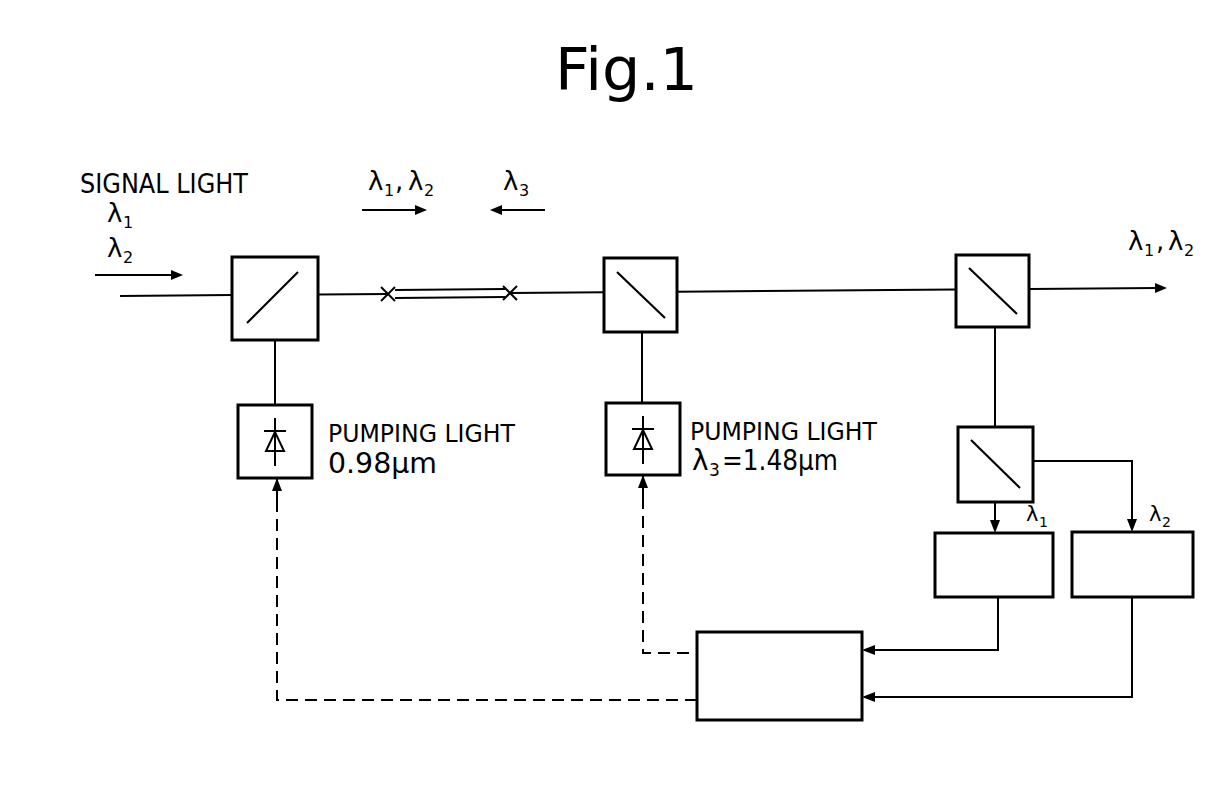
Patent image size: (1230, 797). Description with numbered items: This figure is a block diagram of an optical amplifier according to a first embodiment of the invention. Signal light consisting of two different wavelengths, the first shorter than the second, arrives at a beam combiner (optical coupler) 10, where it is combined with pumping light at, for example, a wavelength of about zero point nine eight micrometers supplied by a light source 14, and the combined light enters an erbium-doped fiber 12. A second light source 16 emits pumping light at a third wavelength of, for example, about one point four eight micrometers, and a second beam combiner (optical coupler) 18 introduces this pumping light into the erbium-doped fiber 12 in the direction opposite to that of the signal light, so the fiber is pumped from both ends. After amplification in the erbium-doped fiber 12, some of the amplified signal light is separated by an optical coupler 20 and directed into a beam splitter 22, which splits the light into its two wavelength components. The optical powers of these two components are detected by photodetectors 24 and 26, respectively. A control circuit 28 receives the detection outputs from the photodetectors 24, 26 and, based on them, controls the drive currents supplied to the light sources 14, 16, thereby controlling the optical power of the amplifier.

The beam combiner (optical coupler) 10 is at (272, 257).
The erbium-doped fiber 12 is at (464, 318).
The light source 14 is at (238, 437).
The light source 16 is at (606, 451).
The beam combiner (optical coupler) 18 is at (640, 258).
The optical coupler 20 is at (995, 255).
The beam splitter 22 is at (1033, 441).
The photodetector 24 is at (935, 562).
The photodetector 26 is at (1158, 598).
The control circuit 28 is at (762, 632).